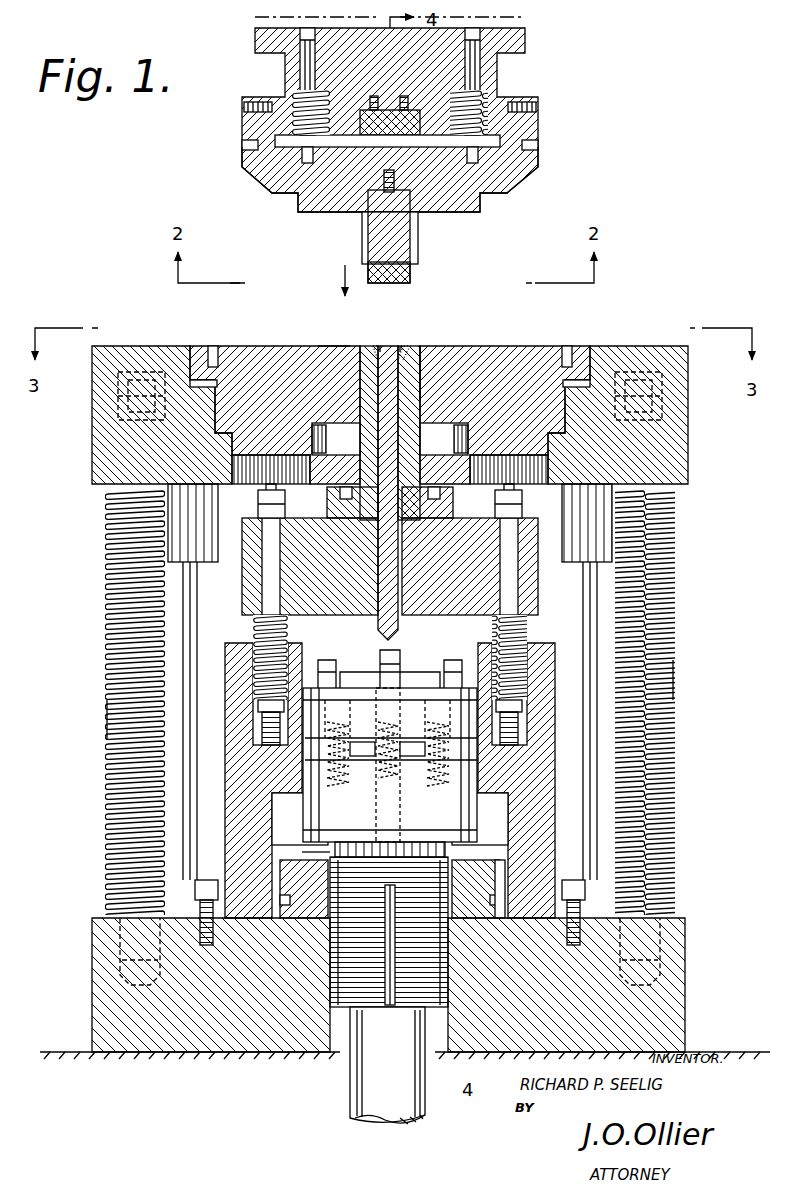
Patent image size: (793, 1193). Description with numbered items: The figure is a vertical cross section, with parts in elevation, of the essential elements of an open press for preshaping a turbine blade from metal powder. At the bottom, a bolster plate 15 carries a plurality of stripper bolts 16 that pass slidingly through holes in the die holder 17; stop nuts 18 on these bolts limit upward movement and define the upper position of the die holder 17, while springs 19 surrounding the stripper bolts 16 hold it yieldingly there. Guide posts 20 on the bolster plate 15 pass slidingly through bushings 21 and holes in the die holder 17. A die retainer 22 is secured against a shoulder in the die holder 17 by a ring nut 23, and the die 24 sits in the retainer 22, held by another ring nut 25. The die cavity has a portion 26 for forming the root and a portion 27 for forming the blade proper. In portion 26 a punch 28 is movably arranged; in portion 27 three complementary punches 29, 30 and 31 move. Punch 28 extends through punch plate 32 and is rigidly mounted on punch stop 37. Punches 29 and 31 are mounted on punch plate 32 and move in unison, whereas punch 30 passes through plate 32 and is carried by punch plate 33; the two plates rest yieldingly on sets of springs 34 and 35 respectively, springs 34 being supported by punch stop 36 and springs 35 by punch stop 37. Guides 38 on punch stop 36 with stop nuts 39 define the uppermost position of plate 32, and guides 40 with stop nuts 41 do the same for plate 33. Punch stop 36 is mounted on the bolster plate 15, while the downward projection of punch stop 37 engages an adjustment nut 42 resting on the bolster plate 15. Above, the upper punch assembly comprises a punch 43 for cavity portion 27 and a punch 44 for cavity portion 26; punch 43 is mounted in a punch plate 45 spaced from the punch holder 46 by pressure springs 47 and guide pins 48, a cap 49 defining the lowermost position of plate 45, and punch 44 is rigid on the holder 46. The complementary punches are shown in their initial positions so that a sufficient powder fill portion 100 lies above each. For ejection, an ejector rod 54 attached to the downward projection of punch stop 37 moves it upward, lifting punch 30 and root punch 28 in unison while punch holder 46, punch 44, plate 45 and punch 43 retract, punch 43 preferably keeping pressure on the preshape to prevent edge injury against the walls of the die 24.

The bolster plate 15 is at (95, 990).
The stripper bolt 16 is at (120, 720).
The die holder 17 is at (672, 455).
The stop nut 18 is at (120, 402).
The spring 19 is at (112, 600).
The guide post 20 is at (198, 604).
The bushing 21 is at (214, 502).
The die retainer 22 is at (268, 348).
The ring nut 23 is at (212, 348).
The die 24 is at (335, 346).
The ring nut 25 is at (283, 469).
The die cavity portion 26 is at (352, 352).
The die cavity portion 27 is at (414, 385).
The punch 28 is at (366, 430).
The complementary punch 29 is at (365, 398).
The complementary punch 30 is at (412, 435).
The complementary punch 31 is at (418, 400).
The punch plate 32 is at (266, 572).
The punch plate 33 is at (312, 723).
The spring 34 is at (256, 622).
The spring 35 is at (313, 743).
The punch stop 36 is at (232, 665).
The punch stop 37 is at (470, 815).
The guide 38 is at (265, 580).
The stop nut 39 is at (282, 510).
The guide 40 is at (378, 720).
The stop nut 41 is at (402, 662).
The adjustment nut 42 is at (493, 872).
The punch 43 is at (412, 270).
The punch 44 is at (366, 226).
The punch plate 45 is at (322, 190).
The punch holder 46 is at (388, 64).
The pressure spring 47 is at (295, 108).
The guide pin 48 is at (305, 60).
The cap 49 is at (265, 150).
The ejector rod 54 is at (355, 1082).
The powder fill portion 100 is at (402, 346).